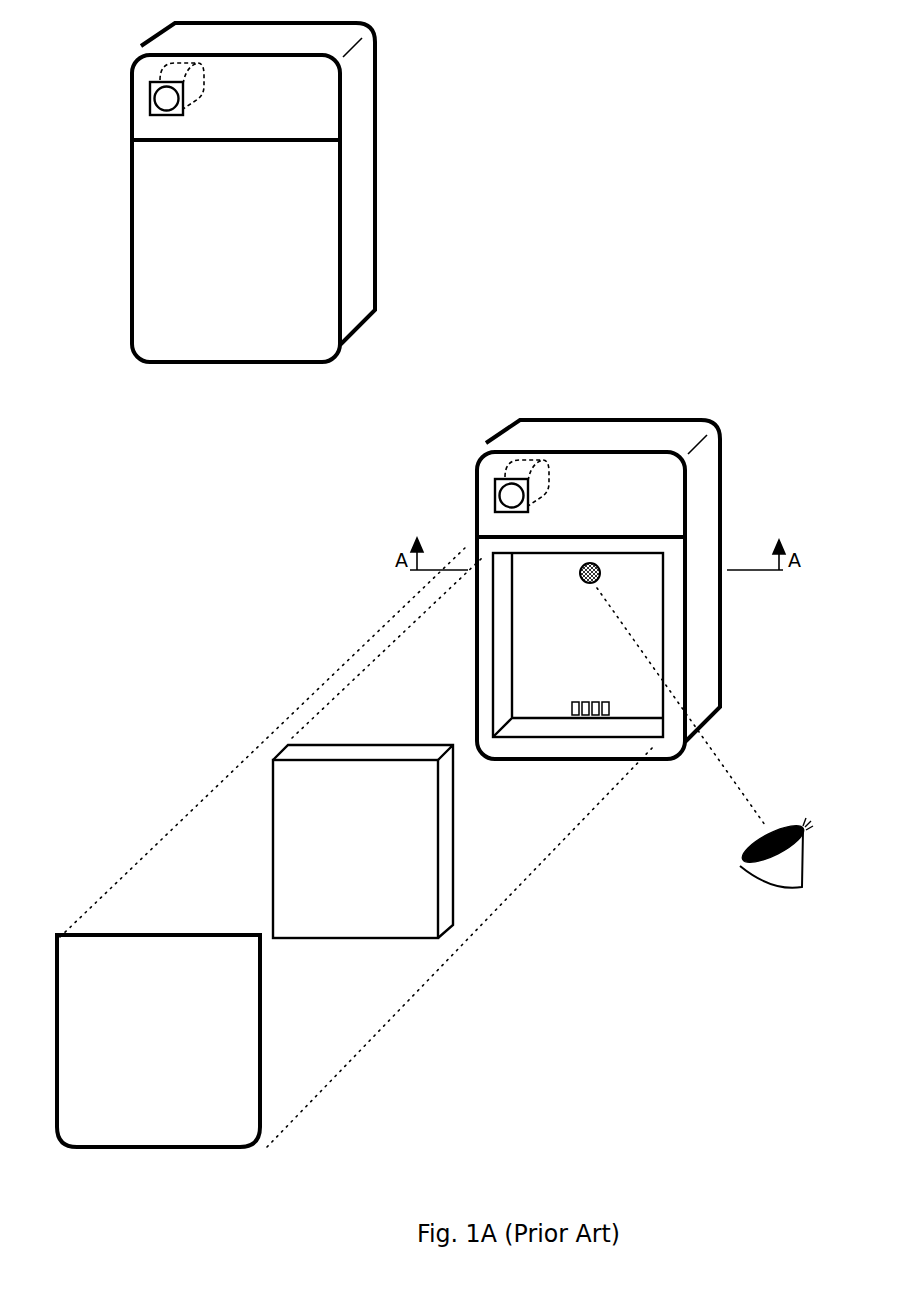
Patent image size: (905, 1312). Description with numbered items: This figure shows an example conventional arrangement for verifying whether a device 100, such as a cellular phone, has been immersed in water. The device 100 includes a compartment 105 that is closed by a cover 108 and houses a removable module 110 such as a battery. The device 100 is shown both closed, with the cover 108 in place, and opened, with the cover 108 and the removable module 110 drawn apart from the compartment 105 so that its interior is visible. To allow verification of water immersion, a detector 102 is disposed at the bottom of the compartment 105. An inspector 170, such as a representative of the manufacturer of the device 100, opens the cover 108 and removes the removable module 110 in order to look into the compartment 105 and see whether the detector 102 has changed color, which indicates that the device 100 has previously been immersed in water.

The device 100 is at (105, 151).
The detector 102 is at (582, 578).
The compartment 105 is at (648, 618).
The cover 108 is at (148, 272).
The removable module 110 is at (288, 847).
The inspector 170 is at (790, 865).